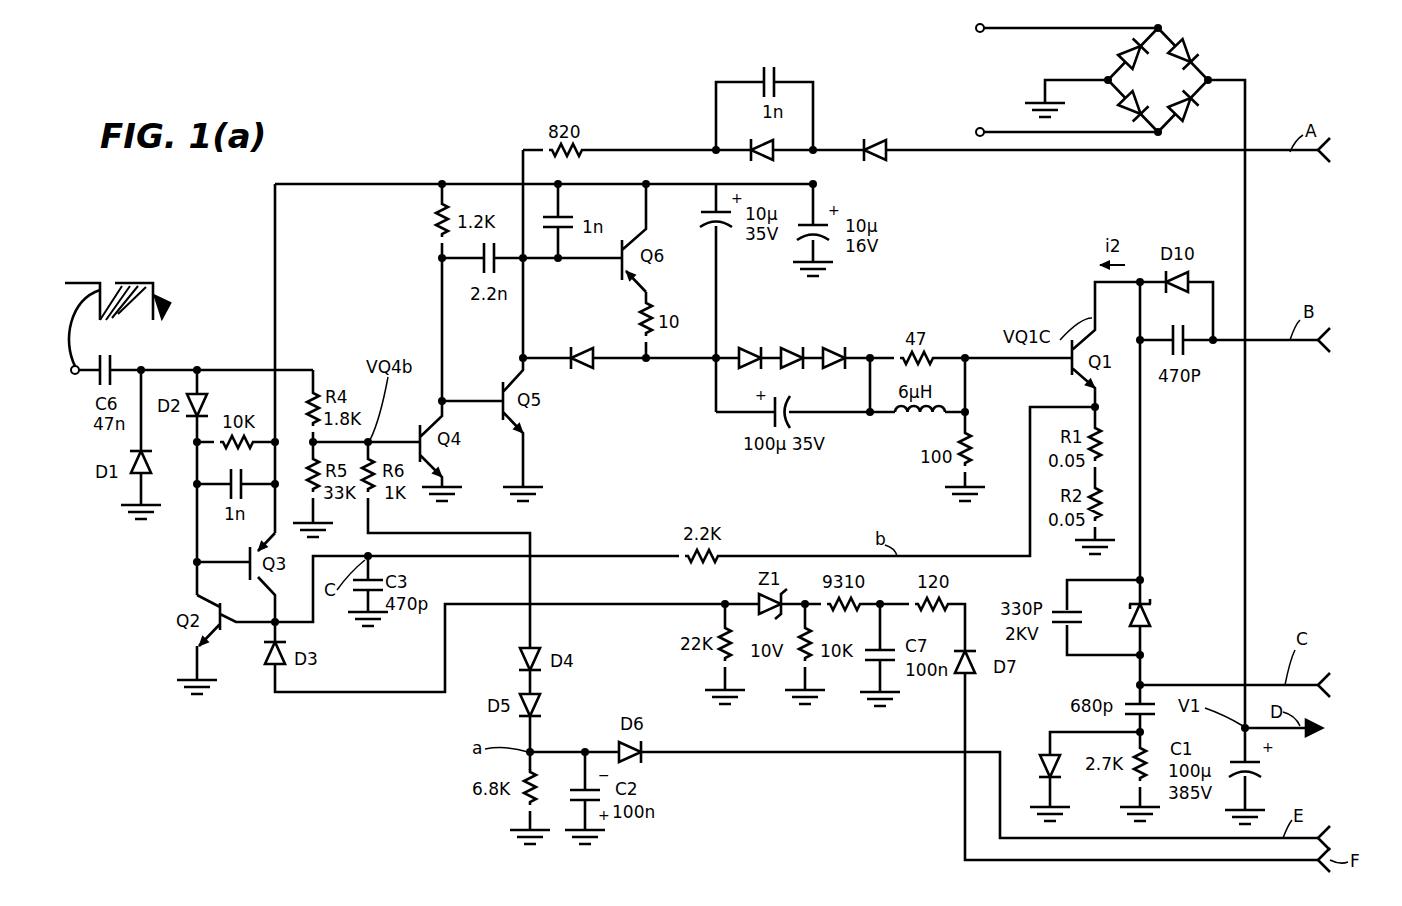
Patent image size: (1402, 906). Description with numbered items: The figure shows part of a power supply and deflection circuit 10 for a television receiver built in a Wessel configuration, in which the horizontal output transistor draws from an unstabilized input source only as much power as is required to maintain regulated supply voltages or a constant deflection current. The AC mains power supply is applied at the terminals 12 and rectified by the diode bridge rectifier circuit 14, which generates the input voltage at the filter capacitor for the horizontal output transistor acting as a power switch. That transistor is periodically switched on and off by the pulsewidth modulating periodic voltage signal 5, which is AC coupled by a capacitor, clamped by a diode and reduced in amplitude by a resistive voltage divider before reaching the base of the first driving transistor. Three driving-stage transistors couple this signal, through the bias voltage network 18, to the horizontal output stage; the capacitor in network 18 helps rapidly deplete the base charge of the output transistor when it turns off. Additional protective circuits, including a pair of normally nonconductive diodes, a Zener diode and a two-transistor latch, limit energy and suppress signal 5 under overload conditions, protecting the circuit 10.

The pulsewidth modulating periodic voltage signal 5 is at (132, 283).
The power supply and deflection circuit 10 is at (368, 167).
The terminals 12 is at (992, 111).
The diode bridge rectifier circuit 14 is at (1169, 90).
The bias voltage network 18 is at (852, 402).